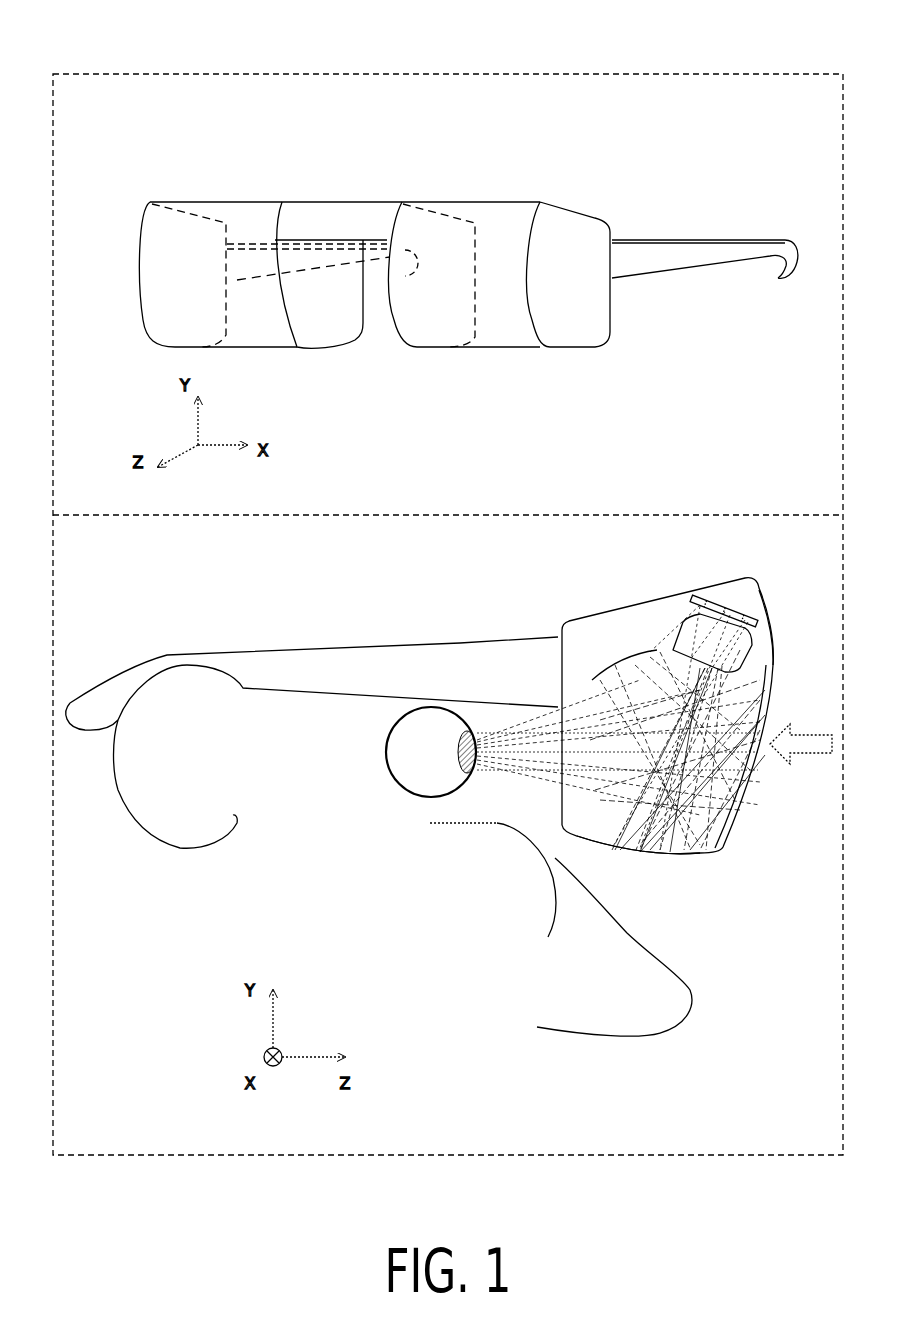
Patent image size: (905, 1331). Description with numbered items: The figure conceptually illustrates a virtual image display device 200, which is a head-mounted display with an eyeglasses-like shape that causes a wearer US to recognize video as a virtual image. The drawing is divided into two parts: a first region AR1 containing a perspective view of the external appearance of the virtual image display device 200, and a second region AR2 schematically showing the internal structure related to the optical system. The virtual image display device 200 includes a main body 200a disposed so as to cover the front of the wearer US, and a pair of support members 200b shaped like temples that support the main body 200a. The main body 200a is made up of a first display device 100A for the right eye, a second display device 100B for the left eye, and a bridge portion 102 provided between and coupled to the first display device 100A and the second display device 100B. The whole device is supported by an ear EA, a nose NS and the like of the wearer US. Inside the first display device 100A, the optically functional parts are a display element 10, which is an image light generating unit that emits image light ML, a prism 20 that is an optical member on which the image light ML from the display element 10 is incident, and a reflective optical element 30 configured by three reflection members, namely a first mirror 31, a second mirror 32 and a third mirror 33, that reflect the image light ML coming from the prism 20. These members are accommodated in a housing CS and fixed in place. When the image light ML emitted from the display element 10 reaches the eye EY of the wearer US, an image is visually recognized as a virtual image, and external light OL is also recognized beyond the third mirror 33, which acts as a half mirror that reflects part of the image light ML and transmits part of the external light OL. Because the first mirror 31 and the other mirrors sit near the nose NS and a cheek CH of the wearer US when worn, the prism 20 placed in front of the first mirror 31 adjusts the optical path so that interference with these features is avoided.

The virtual image display device 200 is at (380, 160).
The main body 200a is at (402, 188).
The support members 200b is at (253, 260).
The first display device 100A is at (207, 190).
The second display device 100B is at (495, 192).
The bridge portion 102 is at (307, 210).
The display element 10 is at (715, 598).
The prism 20 is at (673, 635).
The reflective optical element 30 is at (780, 665).
The first mirror 31 is at (587, 837).
The second mirror 32 is at (623, 677).
The third mirror 33 is at (768, 693).
The housing CS is at (760, 632).
The image light ML is at (613, 740).
The external light OL is at (802, 765).
The eye EY is at (416, 785).
The ear EA is at (180, 840).
The wearer US is at (213, 952).
The cheek CH is at (503, 853).
The nose NS is at (615, 942).
The first region AR1 is at (685, 73).
The second region AR2 is at (683, 1157).